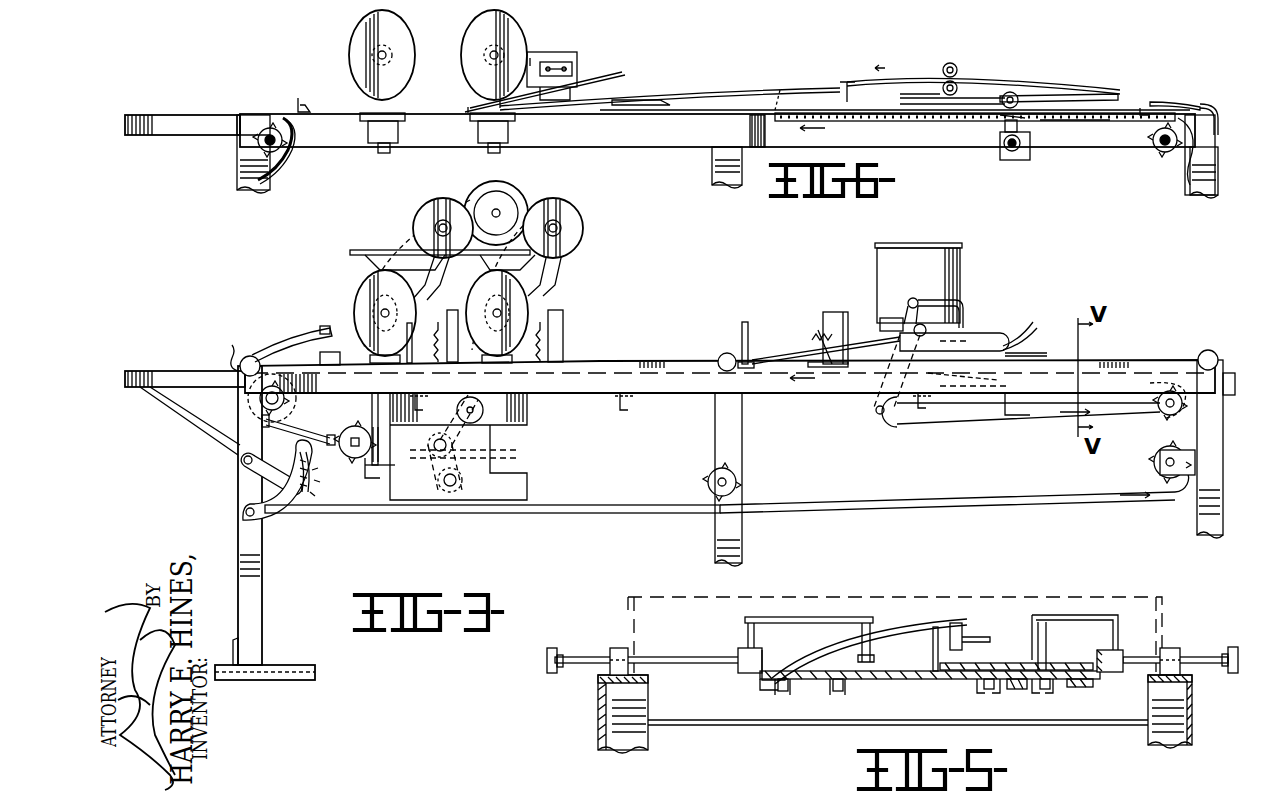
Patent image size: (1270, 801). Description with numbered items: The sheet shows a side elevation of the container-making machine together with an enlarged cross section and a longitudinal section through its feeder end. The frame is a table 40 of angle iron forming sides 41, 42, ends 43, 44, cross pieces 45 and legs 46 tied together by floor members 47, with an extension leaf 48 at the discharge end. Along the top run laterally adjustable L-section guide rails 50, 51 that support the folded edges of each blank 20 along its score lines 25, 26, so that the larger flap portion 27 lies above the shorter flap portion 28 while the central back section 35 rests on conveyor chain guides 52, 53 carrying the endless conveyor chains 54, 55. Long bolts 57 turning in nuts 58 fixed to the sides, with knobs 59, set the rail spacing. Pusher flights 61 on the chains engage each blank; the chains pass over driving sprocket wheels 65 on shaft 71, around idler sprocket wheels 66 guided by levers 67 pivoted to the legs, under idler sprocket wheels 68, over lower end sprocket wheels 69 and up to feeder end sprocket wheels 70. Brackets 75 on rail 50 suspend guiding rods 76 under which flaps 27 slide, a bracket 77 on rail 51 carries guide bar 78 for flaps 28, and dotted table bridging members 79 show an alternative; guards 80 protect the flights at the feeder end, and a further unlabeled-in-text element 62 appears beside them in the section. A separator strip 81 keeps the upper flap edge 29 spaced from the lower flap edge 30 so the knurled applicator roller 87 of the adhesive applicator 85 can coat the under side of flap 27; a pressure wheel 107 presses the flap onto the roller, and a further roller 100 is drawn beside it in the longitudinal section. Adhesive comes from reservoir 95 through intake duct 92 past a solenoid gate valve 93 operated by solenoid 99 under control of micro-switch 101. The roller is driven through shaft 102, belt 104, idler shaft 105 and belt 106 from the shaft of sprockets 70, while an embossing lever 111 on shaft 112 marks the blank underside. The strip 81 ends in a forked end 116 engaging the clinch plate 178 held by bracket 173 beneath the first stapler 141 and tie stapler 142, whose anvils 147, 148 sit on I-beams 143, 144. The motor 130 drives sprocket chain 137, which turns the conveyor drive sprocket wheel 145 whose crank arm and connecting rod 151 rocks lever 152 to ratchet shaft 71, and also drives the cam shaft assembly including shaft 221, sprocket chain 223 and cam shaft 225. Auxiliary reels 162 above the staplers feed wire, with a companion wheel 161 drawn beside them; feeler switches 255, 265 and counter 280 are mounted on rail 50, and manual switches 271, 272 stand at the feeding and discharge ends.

In FIG. 6, the container blank 20 is at (1041, 72).
In FIG. 5, the container blank 20 is at (940, 603).
In FIG. 5, the score line 25 is at (770, 665).
In FIG. 5, the score line 26 is at (1095, 668).
In FIG. 6, the larger flap portion 27 is at (920, 80).
In FIG. 3, the larger flap portion 27 is at (1035, 320).
In FIG. 5, the larger flap portion 27 is at (895, 620).
In FIG. 6, the shorter flap portion 28 is at (862, 73).
In FIG. 3, the shorter flap portion 28 is at (1040, 332).
In FIG. 5, the shorter flap portion 28 is at (995, 668).
In FIG. 5, the outer edge of upper flap 29 is at (965, 620).
In FIG. 5, the outer edge of shorter flap 30 is at (1016, 657).
In FIG. 6, the central back section 35 is at (1088, 122).
In FIG. 3, the central back section 35 is at (1020, 402).
In FIG. 5, the central back section 35 is at (912, 682).
In FIG. 6, the table 40 is at (1212, 158).
In FIG. 3, the table 40 is at (658, 361).
In FIG. 6, the side 41 is at (880, 148).
In FIG. 5, the side 41 is at (1193, 703).
In FIG. 3, the side 42 is at (1120, 361).
In FIG. 5, the side 42 is at (598, 710).
In FIG. 6, the end 43 is at (235, 130).
In FIG. 6, the end 44 is at (1208, 108).
In FIG. 3, the cross piece 45 is at (686, 409).
In FIG. 5, the cross piece 45 is at (710, 720).
In FIG. 6, the leg 46 is at (237, 183).
In FIG. 3, the leg 46 is at (262, 569).
In FIG. 5, the leg 46 is at (648, 745).
In FIG. 3, the member 47 is at (300, 665).
In FIG. 6, the extension leaf 48 is at (168, 114).
In FIG. 3, the extension leaf 48 is at (140, 390).
In FIG. 5, the guide rail 50 is at (762, 685).
In FIG. 5, the guide rail 51 is at (1085, 690).
In FIG. 5, the conveyor chain guide 52 is at (1021, 698).
In FIG. 5, the conveyor chain guide 53 is at (831, 696).
In FIG. 5, the conveyor sprocket chain 54 is at (1018, 690).
In FIG. 6, the conveyor sprocket chain 55 is at (912, 122).
In FIG. 3, the conveyor sprocket chain 55 is at (880, 500).
In FIG. 5, the conveyor sprocket chain 55 is at (833, 695).
In FIG. 5, the long bolt 57 is at (700, 657).
In FIG. 5, the nut 58 is at (620, 648).
In FIG. 3, the adjusting knob 59 is at (250, 355).
In FIG. 5, the adjusting knob 59 is at (552, 674).
In FIG. 6, the pusher flight 61 is at (305, 96).
In FIG. 5, the post 62 is at (932, 648).
In FIG. 6, the sprocket wheel 65 is at (283, 148).
In FIG. 3, the sprocket wheel 65 is at (290, 400).
In FIG. 3, the idler sprocket wheel 66 is at (312, 488).
In FIG. 3, the lever 67 is at (250, 468).
In FIG. 3, the idler sprocket wheel 68 is at (738, 476).
In FIG. 3, the lower end sprocket wheel 69 is at (1155, 463).
In FIG. 6, the feeder end sprocket wheel 70 is at (798, 88).
In FIG. 3, the feeder end sprocket wheel 70 is at (1160, 415).
In FIG. 6, the driving shaft 71 is at (272, 128).
In FIG. 3, the bracket 75 is at (748, 338).
In FIG. 5, the bracket 75 is at (745, 628).
In FIG. 5, the guiding rod 76 is at (883, 642).
In FIG. 5, the bracket 77 is at (1092, 615).
In FIG. 5, the guide bar 78 is at (1046, 637).
In FIG. 5, the table bridging member 79 is at (1035, 601).
In FIG. 6, the conveyor flight guard 80 is at (1178, 102).
In FIG. 6, the separator strip 81 is at (745, 108).
In FIG. 3, the separator strip 81 is at (1044, 352).
In FIG. 5, the separator strip 81 is at (955, 684).
In FIG. 3, the adhesive applicator 85 is at (981, 333).
In FIG. 6, the applicator roller 87 is at (956, 84).
In FIG. 5, the applicator roller 87 is at (964, 633).
In FIG. 3, the intake duct 92 is at (963, 302).
In FIG. 3, the solenoid operated gate valve 93 is at (920, 298).
In FIG. 3, the adhesive supply reservoir 95 is at (960, 260).
In FIG. 3, the solenoid 99 is at (880, 318).
In FIG. 6, the roller 100 is at (1018, 98).
In FIG. 3, the micro-switch 101 is at (836, 312).
In FIG. 6, the shaft 102 is at (919, 86).
In FIG. 3, the shaft 102 is at (969, 385).
In FIG. 5, the shaft 102 is at (1001, 629).
In FIG. 3, the belt 104 is at (895, 413).
In FIG. 3, the idler shaft 105 is at (870, 410).
In FIG. 3, the belt or chain 106 is at (968, 418).
In FIG. 6, the pressure wheel 107 is at (953, 62).
In FIG. 6, the embossing lever 111 is at (1003, 128).
In FIG. 6, the shaft 112 is at (1014, 165).
In FIG. 6, the forked end 116 is at (628, 100).
In FIG. 3, the electric motor 130 is at (534, 193).
In FIG. 3, the sprocket chain 137 is at (360, 480).
In FIG. 6, the first stapler 141 is at (470, 30).
In FIG. 3, the first stapler 141 is at (530, 283).
In FIG. 6, the tie stapler 142 is at (360, 33).
In FIG. 3, the tie stapler 142 is at (360, 283).
In FIG. 3, the I-beam 143 is at (375, 470).
In FIG. 3, the I-beam 144 is at (512, 473).
In FIG. 3, the conveyor drive sprocket wheel 145 is at (348, 452).
In FIG. 6, the anvil 147 is at (508, 133).
In FIG. 6, the anvil 148 is at (398, 133).
In FIG. 3, the crank arm and connecting rod 151 is at (295, 425).
In FIG. 3, the rocking lever 152 is at (255, 402).
In FIG. 3, the wheel 161 is at (580, 215).
In FIG. 3, the auxiliary reel 162 is at (418, 213).
In FIG. 6, the bracket 173 is at (545, 58).
In FIG. 6, the clinch plate 178 is at (590, 112).
In FIG. 3, the shaft 221 is at (435, 495).
In FIG. 3, the sprocket chain 223 is at (505, 457).
In FIG. 3, the shaft 225 is at (452, 492).
In FIG. 3, the feeler micro-switch 255 is at (563, 328).
In FIG. 3, the feeler switch 265 is at (457, 336).
In FIG. 3, the start and stop switch 271 is at (1229, 396).
In FIG. 3, the safety stop switch 272 is at (236, 368).
In FIG. 3, the counter 280 is at (330, 324).